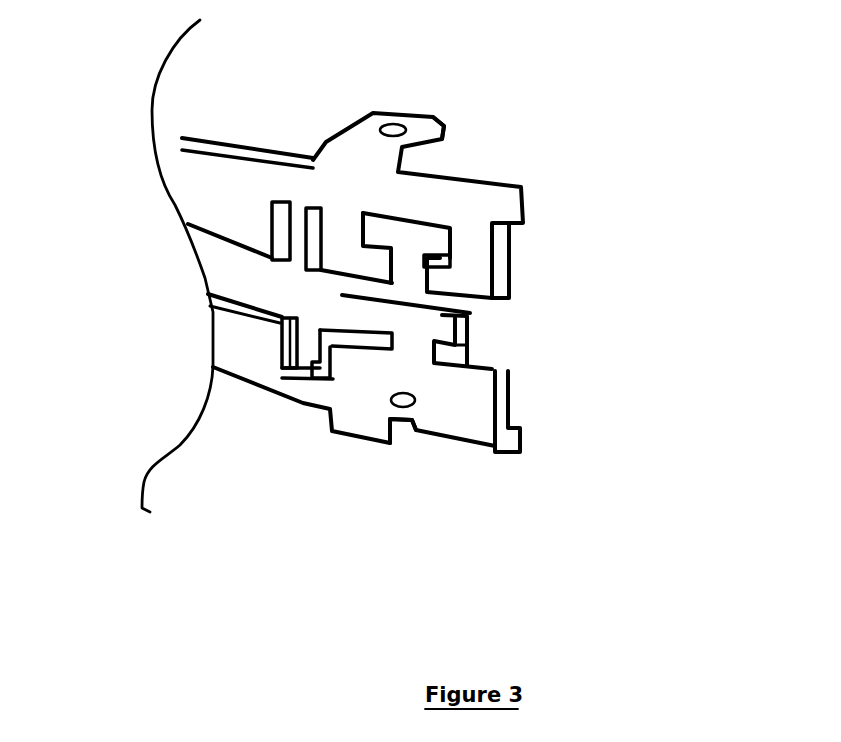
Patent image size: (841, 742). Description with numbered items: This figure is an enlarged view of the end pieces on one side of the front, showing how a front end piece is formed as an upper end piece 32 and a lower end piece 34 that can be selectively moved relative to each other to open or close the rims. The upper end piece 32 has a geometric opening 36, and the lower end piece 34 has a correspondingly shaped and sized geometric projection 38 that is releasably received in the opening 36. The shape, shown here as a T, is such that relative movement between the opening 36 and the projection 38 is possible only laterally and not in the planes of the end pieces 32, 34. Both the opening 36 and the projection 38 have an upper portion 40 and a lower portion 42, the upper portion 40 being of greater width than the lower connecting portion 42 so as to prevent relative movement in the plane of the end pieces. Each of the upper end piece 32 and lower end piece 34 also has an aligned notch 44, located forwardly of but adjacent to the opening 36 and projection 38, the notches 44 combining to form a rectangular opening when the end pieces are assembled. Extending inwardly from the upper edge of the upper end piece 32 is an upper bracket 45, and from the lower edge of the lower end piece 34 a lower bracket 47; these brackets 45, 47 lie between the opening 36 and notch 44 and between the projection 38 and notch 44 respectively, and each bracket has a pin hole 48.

The upper end piece 32 is at (545, 208).
The lower end piece 34 is at (510, 383).
The geometric opening 36 is at (417, 240).
The geometric projection 38 is at (480, 336).
The upper portion 40 is at (452, 226).
The lower portion 42 is at (412, 268).
The notch 44 is at (295, 222).
The upper bracket 45 is at (433, 117).
The lower bracket 47 is at (403, 441).
The pin hole 48 is at (388, 113).